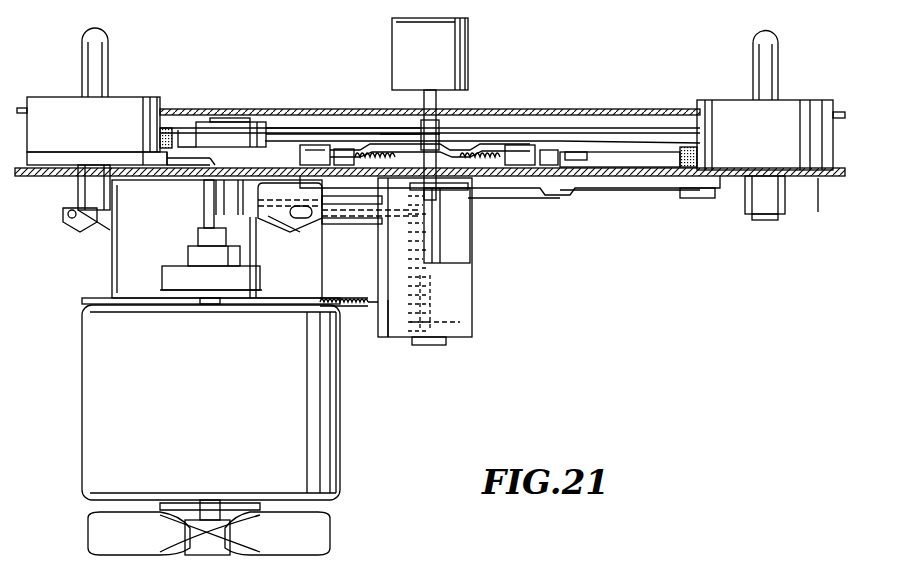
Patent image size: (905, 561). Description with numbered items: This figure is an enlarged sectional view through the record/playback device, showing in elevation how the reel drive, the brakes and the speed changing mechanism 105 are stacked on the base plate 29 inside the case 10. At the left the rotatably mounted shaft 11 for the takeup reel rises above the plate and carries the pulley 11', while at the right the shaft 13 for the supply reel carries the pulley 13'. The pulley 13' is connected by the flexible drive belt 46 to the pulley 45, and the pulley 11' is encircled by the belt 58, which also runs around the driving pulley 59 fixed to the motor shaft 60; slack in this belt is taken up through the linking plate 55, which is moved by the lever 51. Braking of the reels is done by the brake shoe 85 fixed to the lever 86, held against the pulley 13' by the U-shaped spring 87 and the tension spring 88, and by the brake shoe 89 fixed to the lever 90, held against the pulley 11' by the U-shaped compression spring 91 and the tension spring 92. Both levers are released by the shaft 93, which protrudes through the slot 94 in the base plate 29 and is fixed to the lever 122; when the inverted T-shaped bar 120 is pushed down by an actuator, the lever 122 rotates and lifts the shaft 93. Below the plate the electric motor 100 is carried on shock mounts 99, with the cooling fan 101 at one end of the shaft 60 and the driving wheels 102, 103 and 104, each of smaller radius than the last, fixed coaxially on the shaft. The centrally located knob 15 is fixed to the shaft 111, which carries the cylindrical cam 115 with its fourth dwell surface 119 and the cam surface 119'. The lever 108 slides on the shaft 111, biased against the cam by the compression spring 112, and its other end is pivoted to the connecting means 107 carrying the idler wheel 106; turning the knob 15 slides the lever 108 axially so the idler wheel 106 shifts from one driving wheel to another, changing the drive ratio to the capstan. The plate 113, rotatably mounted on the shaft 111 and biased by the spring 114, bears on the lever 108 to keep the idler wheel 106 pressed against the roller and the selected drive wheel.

The case 10 is at (838, 180).
The shaft 11 is at (109, 116).
The pulley 11' is at (116, 114).
The shaft 13 is at (777, 119).
The pulley 13' is at (771, 116).
The knob 15 is at (468, 35).
The base plate 29 is at (818, 178).
The pulley 45 is at (278, 128).
The flexible drive belt 46 is at (318, 132).
The lever 51 is at (637, 182).
The linking plate 55 is at (185, 168).
The belt 58 is at (143, 168).
The driving pulley 59 is at (210, 124).
The shaft 60 is at (208, 196).
The brake shoe 85 is at (700, 156).
The lever 86 is at (638, 150).
The U-shaped spring 87 is at (570, 152).
The tension spring 88 is at (490, 143).
The brake shoe 89 is at (160, 137).
The lever 90 is at (352, 146).
The U-shaped compression spring 91 is at (302, 150).
The tension spring 92 is at (383, 144).
The shaft 93 is at (428, 118).
The slot 94 is at (440, 188).
The shock mounts 99 is at (72, 232).
The electric motor 100 is at (338, 485).
The cooling fan 101 is at (332, 540).
The driving wheel 102 is at (172, 285).
The driving wheel 103 is at (188, 257).
The driving wheel 104 is at (198, 237).
The speed changing mechanism 105 is at (475, 302).
The idler wheel 106 is at (262, 218).
The connecting means 107 is at (316, 222).
The lever 108 is at (370, 225).
The shaft 111 is at (438, 345).
The compression spring 112 is at (470, 320).
The plate 113 is at (400, 340).
The spring 114 is at (358, 312).
The cylindrical cam 115 is at (478, 198).
The fourth dwell surface 119 is at (474, 235).
The cam surface 119' is at (486, 225).
The inverted T-shaped bar 120 is at (712, 198).
The lever 122 is at (660, 184).